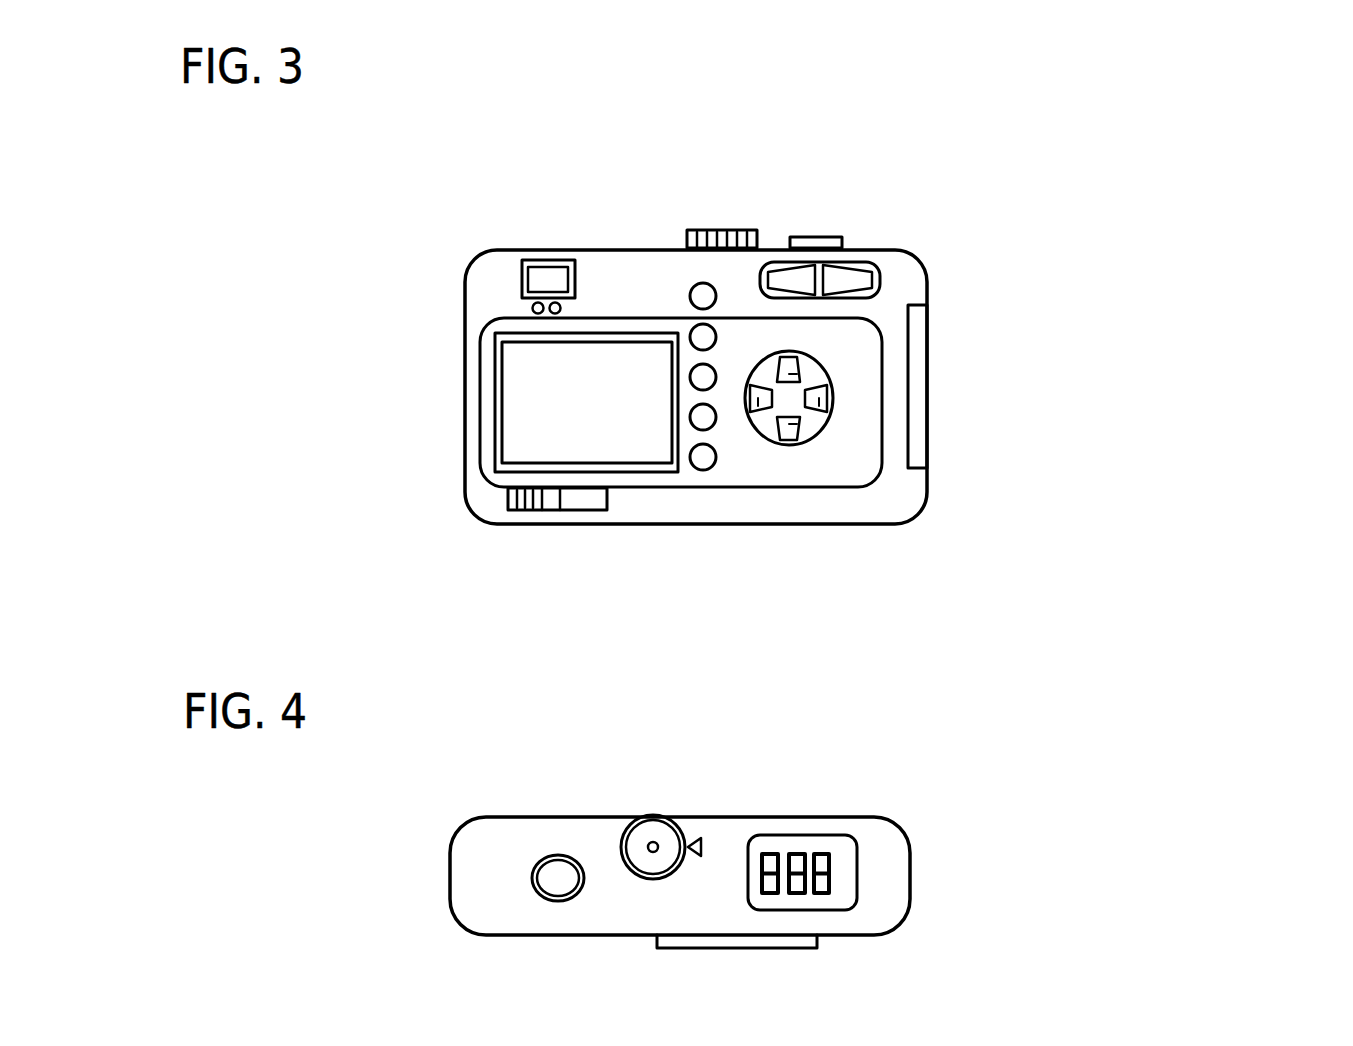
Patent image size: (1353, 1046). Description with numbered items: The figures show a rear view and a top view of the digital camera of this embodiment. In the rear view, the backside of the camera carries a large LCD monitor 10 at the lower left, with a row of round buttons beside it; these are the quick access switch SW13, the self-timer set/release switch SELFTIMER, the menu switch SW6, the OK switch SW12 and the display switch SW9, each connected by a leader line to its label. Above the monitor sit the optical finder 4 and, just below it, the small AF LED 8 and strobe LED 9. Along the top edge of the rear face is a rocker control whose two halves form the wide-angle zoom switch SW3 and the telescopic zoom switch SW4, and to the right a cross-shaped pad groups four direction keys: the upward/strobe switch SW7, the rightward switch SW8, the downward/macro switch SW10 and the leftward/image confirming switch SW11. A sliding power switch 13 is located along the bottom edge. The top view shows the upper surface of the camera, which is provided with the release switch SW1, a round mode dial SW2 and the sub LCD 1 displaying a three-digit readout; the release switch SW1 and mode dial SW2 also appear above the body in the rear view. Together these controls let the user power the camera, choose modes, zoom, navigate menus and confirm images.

In FIG. 4, the sub liquid crystal display 1 is at (858, 870).
In FIG. 3, the optical finder 4 is at (530, 281).
In FIG. 3, the AF LED 8 is at (531, 308).
In FIG. 3, the strobe LED 9 is at (553, 314).
In FIG. 3, the LCD monitor 10 is at (518, 447).
In FIG. 3, the power switch 13 is at (532, 510).
In FIG. 3, the release switch SW1 is at (832, 237).
In FIG. 4, the release switch SW1 is at (558, 855).
In FIG. 3, the mode dial SW2 is at (720, 230).
In FIG. 4, the mode dial SW2 is at (703, 758).
In FIG. 3, the wide-angle zoom switch SW3 is at (783, 277).
In FIG. 3, the telescopic zoom switch SW4 is at (866, 282).
In FIG. 3, the menu switch SW6 is at (690, 380).
In FIG. 3, the upward/strobe switch SW7 is at (800, 375).
In FIG. 3, the rightward switch SW8 is at (827, 397).
In FIG. 3, the display switch SW9 is at (690, 457).
In FIG. 3, the downward/macro switch SW10 is at (800, 427).
In FIG. 3, the leftward/image confirming switch SW11 is at (762, 410).
In FIG. 3, the OK switch SW12 is at (690, 420).
In FIG. 3, the quick access switch SW13 is at (690, 337).
In FIG. 3, the self-timer set/release switch SELFTIMER is at (690, 296).